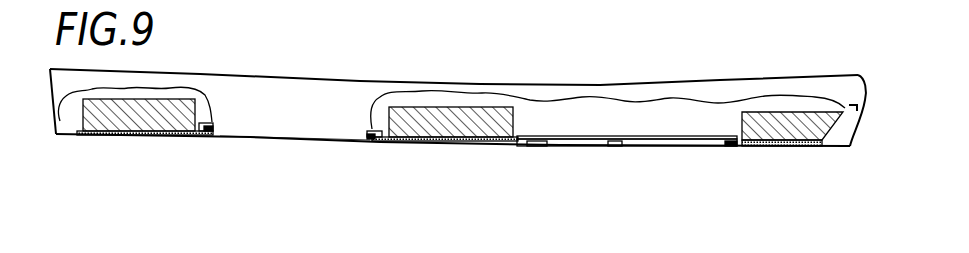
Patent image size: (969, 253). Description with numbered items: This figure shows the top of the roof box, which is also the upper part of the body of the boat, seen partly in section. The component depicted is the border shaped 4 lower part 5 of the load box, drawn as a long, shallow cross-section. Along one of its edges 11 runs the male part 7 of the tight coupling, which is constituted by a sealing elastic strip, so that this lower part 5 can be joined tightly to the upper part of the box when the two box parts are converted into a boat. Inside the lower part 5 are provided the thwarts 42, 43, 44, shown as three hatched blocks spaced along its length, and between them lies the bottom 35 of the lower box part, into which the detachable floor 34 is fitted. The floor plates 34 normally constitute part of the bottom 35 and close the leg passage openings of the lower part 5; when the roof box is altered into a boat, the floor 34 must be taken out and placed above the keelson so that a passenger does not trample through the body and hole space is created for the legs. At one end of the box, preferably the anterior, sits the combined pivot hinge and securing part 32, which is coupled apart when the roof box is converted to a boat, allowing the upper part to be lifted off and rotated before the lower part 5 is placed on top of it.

The border shaped 4 is at (615, 79).
The lower part of the load box 5 is at (292, 128).
The male part of the coupling 7 is at (337, 150).
The edge of the lower part of the box 11 is at (305, 133).
The combined pivot hinge- and securing part 32 is at (849, 104).
The detachable floor 34 is at (550, 145).
The bottom of the lower box part 35 is at (735, 150).
The thwart 42 is at (145, 117).
The thwart 43 is at (456, 112).
The thwart 44 is at (792, 131).